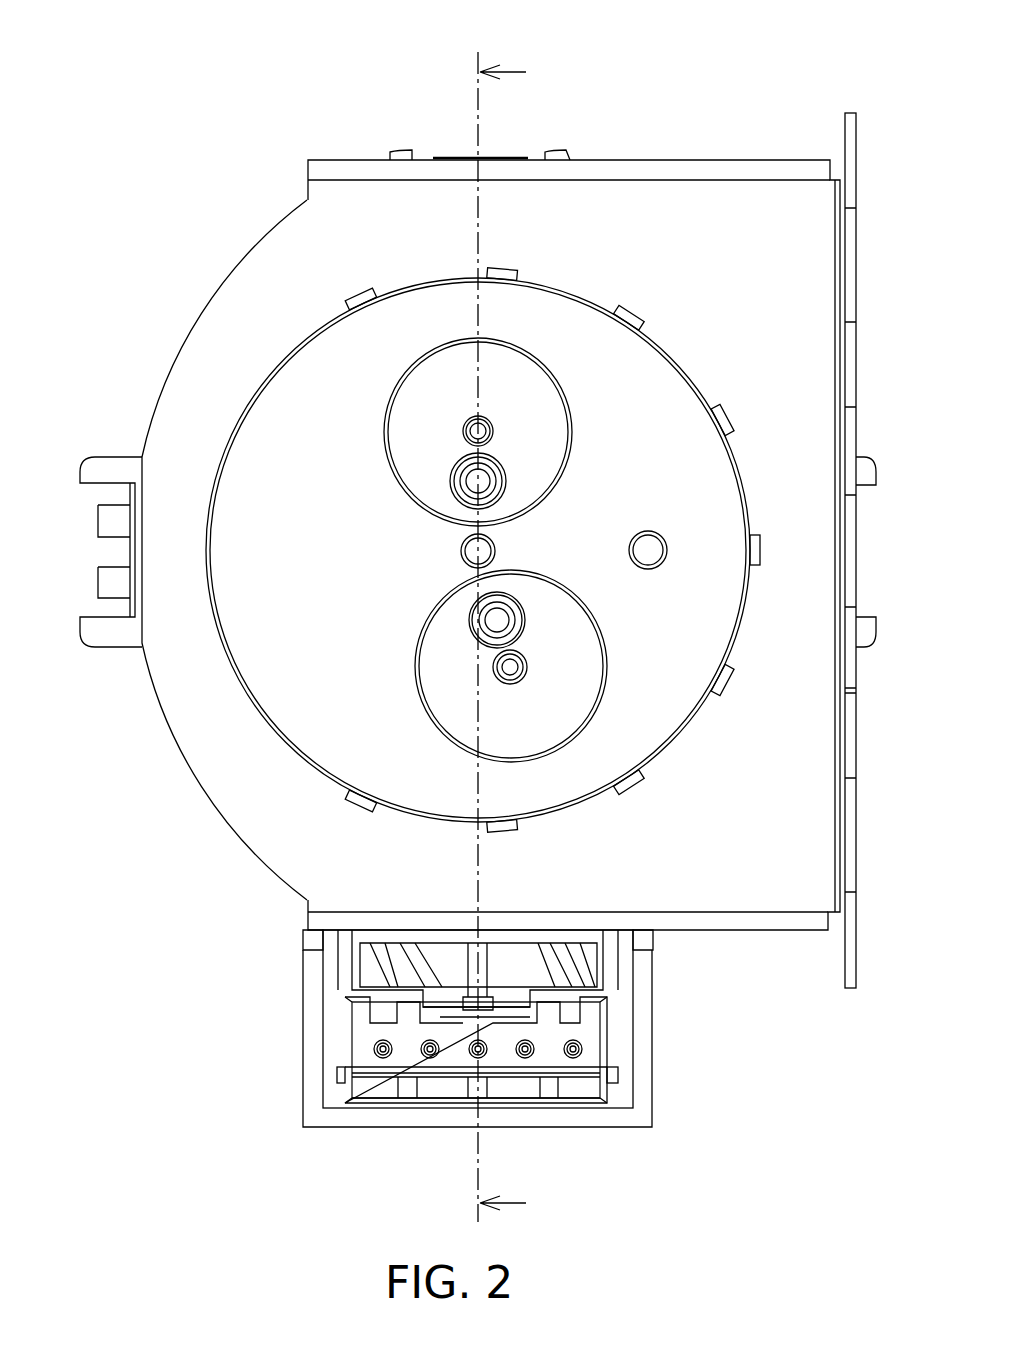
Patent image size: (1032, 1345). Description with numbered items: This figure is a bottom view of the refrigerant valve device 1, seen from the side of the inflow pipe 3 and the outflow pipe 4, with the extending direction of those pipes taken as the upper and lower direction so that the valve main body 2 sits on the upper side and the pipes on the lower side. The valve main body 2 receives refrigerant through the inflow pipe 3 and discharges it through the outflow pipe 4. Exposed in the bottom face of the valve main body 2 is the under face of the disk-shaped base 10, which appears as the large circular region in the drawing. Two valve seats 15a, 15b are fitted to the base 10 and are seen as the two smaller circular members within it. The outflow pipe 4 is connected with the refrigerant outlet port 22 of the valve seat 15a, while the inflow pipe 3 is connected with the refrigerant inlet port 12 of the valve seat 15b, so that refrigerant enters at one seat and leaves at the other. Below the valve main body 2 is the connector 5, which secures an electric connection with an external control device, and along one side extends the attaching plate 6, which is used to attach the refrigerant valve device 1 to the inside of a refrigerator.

The refrigerant valve device 1 is at (121, 59).
The valve main body 2 is at (702, 135).
The inflow pipe 3 is at (472, 637).
The outflow pipe 4 is at (464, 470).
The connector 5 is at (593, 1048).
The attaching plate 6 is at (848, 948).
The base 10 is at (297, 652).
The refrigerant inlet port 12 is at (493, 619).
The valve seat 15a is at (425, 488).
The valve seat 15b is at (430, 647).
The refrigerant outlet port 22 is at (477, 473).